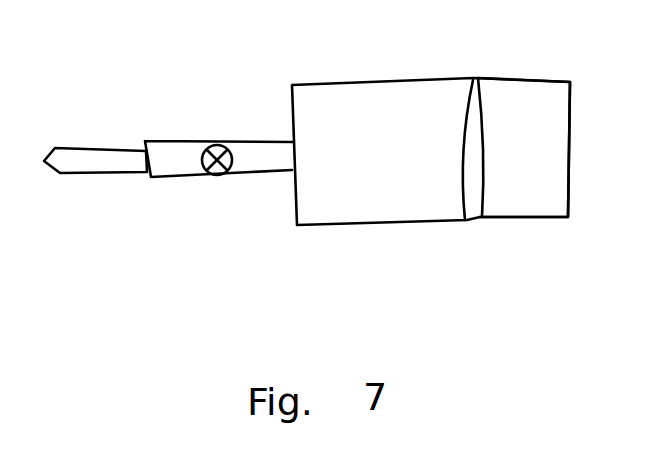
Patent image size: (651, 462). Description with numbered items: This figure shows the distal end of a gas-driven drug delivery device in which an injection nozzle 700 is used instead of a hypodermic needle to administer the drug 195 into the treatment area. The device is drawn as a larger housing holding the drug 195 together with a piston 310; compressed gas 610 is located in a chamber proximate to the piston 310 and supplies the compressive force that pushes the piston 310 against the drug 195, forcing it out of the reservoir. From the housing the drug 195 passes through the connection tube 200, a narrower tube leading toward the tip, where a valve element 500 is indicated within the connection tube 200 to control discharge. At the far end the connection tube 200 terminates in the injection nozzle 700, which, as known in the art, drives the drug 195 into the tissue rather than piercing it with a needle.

The drug 195 is at (372, 157).
The connection tube 200 is at (268, 185).
The piston 310 is at (475, 221).
The marker 500 is at (217, 144).
The compressed gas 610 is at (525, 177).
The injection nozzle 700 is at (82, 178).